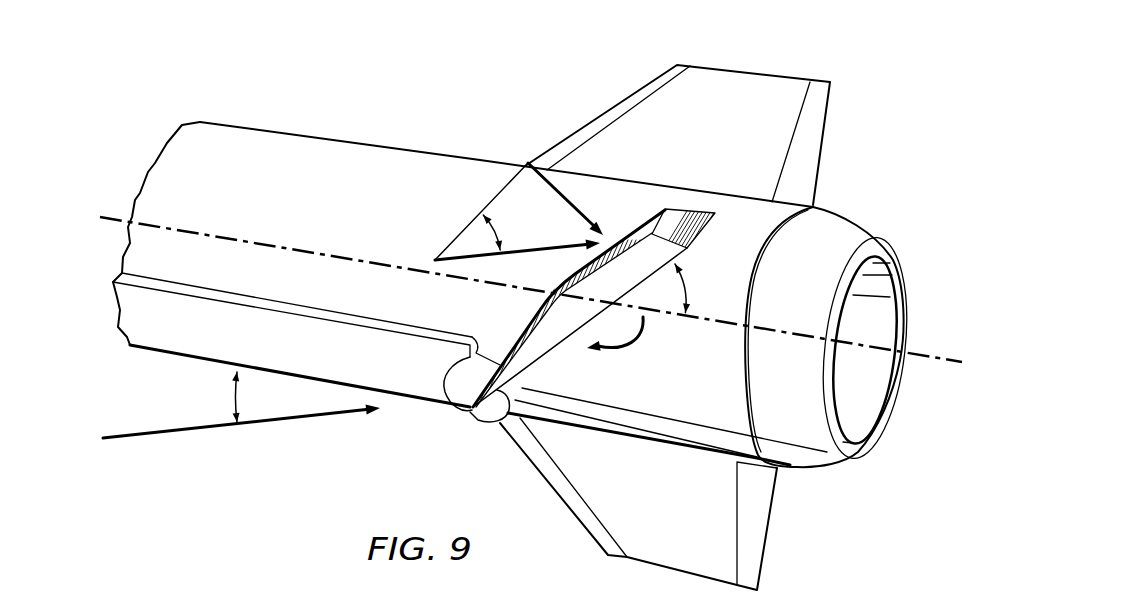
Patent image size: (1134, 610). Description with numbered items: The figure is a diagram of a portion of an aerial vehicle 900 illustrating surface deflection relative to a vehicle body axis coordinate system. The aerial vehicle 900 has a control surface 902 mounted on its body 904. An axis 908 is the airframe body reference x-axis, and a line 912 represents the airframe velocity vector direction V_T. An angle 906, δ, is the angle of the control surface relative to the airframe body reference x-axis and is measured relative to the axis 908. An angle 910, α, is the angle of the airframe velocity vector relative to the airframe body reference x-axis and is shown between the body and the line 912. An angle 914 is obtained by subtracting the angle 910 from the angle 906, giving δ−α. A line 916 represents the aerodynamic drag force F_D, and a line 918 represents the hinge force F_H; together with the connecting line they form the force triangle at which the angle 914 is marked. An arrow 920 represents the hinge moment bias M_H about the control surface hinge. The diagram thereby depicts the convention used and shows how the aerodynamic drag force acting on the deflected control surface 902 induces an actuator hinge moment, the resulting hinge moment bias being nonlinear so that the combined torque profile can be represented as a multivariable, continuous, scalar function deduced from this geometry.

The aerial vehicle 900 is at (456, 78).
The control surface 902 is at (682, 221).
The body 904 is at (357, 157).
The angle δ 906 is at (692, 271).
The axis 908 is at (327, 252).
The angle α 910 is at (233, 400).
The line V_T 912 is at (303, 422).
The angle δ−α 914 is at (468, 225).
The line F_D 916 is at (560, 247).
The line F_H 918 is at (567, 200).
The arrow M_H 920 is at (637, 340).